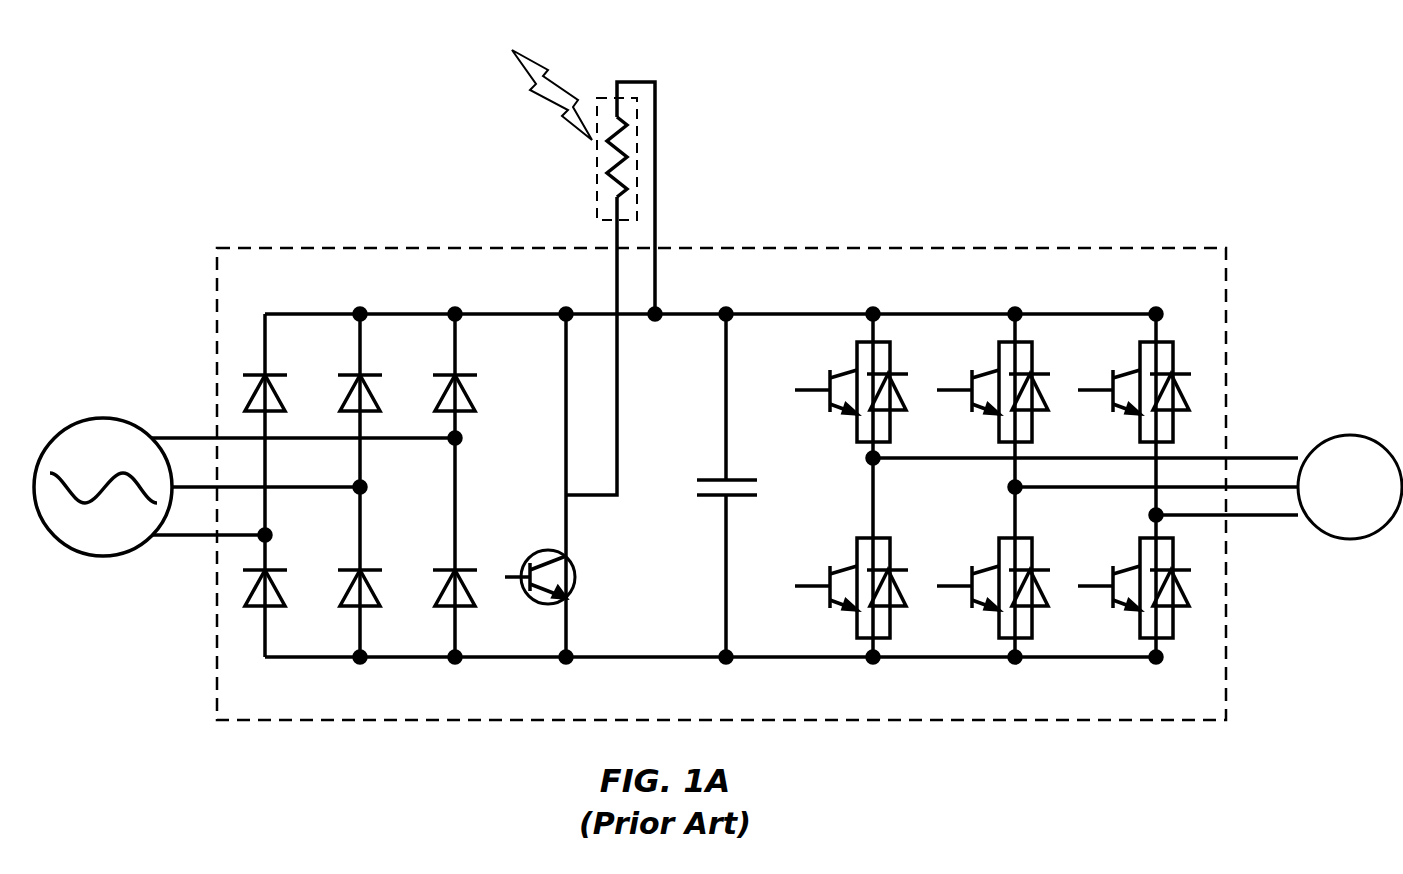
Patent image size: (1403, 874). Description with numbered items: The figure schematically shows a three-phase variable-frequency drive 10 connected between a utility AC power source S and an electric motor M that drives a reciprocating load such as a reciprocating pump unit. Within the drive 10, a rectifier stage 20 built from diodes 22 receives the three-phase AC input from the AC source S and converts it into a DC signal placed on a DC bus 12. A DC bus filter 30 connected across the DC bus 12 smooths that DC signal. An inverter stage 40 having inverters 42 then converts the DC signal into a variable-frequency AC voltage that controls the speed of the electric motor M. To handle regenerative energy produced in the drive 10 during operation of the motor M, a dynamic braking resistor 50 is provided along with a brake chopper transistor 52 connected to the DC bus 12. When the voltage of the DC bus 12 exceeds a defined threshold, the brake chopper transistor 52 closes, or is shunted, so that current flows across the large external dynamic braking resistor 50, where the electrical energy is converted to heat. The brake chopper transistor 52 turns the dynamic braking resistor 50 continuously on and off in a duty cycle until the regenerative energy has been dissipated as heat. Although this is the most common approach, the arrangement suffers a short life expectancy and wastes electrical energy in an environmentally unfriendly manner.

The variable-frequency drive 10 is at (238, 248).
The DC bus 12 is at (328, 313).
The rectifier stage 20 is at (360, 451).
The diodes 22 is at (380, 603).
The DC bus filter 30 is at (705, 478).
The inverter stage 40 is at (1037, 454).
The inverters 42 is at (832, 630).
The dynamic braking resistor 50 is at (597, 182).
The brake chopper transistor 52 is at (568, 598).
The AC power source S is at (102, 558).
The electric motor M is at (1344, 433).